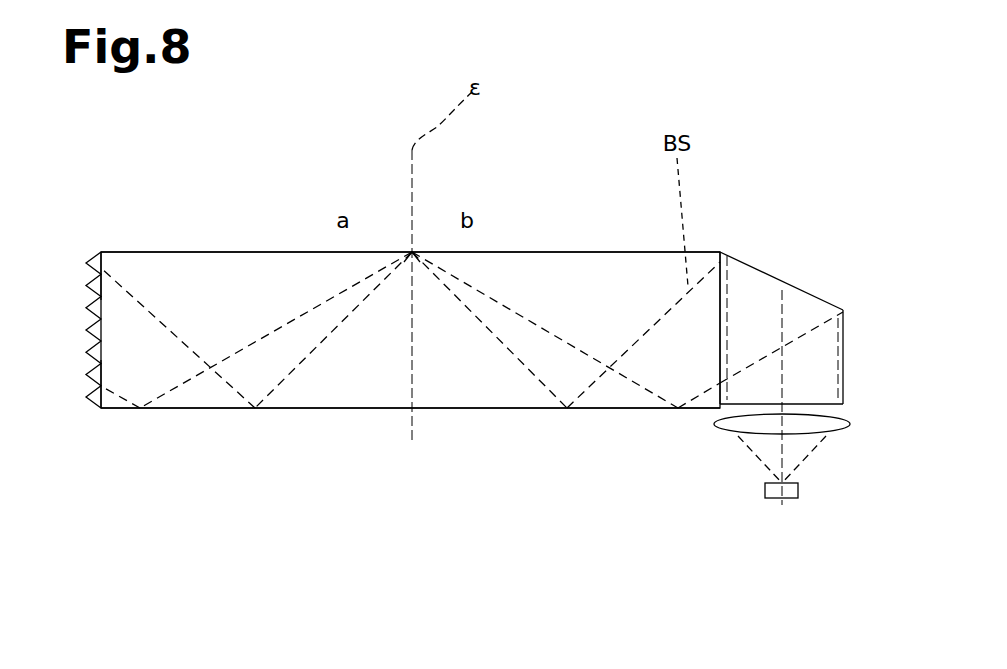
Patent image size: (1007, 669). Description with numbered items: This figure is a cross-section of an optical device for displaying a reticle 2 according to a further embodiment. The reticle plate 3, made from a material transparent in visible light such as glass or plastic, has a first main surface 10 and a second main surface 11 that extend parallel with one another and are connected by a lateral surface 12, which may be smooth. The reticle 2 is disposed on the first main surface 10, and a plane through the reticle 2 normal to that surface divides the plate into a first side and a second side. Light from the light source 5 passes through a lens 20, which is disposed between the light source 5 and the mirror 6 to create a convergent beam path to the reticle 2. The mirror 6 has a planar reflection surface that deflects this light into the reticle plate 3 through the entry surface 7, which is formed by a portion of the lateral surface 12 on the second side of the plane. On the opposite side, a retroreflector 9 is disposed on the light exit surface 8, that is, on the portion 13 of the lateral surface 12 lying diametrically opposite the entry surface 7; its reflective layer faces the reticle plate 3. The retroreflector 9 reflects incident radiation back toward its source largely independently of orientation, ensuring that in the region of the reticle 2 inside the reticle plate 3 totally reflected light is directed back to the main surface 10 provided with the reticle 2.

The reticle 2 is at (414, 249).
The reticle plate 3 is at (265, 260).
The light source 5 is at (788, 515).
The mirror 6 is at (740, 255).
The entry surface 7 is at (710, 302).
The light exit surface 8 is at (104, 287).
The retroreflector 9 is at (76, 283).
The first main surface 10 is at (505, 252).
The second main surface 11 is at (488, 412).
The lateral surface 12 is at (723, 342).
The portion of the lateral surface 13 is at (91, 401).
The lens 20 is at (715, 440).